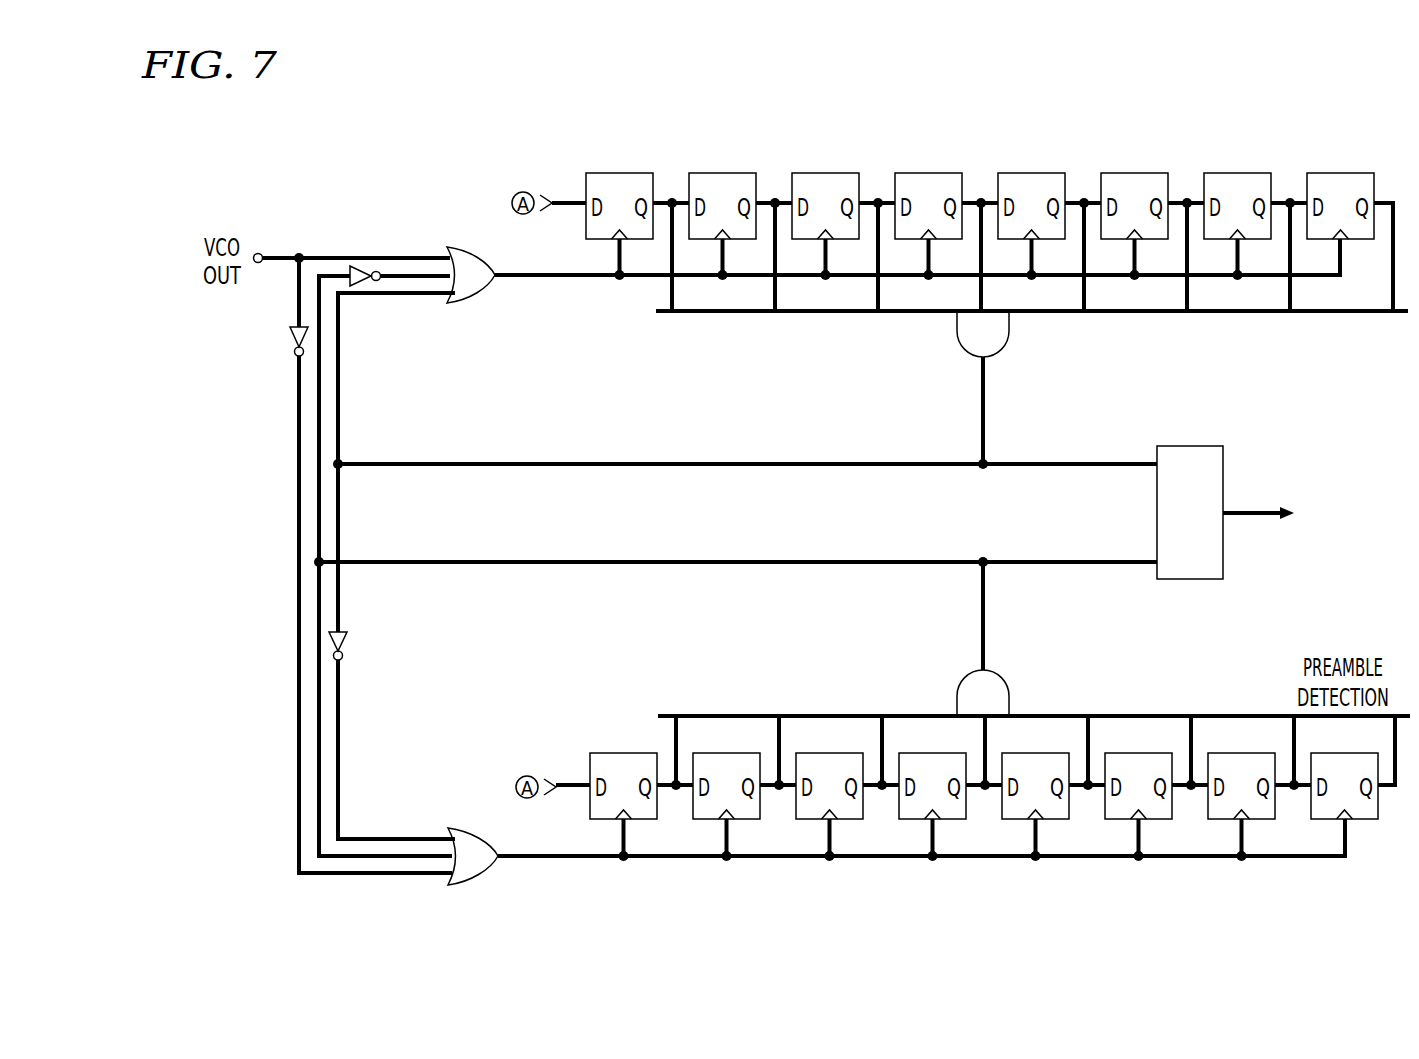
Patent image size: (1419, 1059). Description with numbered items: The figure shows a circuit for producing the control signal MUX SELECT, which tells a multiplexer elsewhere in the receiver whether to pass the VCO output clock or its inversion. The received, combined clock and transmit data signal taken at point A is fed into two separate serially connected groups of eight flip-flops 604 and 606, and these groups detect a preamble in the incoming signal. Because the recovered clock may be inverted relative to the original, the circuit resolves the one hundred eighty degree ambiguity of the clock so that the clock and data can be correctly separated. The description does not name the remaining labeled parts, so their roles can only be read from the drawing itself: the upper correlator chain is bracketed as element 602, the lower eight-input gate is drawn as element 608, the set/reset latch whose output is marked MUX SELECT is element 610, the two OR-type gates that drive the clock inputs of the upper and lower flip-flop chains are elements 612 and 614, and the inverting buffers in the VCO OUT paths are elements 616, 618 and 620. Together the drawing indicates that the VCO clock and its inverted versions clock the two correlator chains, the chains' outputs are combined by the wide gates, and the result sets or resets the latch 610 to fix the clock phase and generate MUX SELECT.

The 0 degree clock correlator (shift register of D flip-flops) 602 is at (1385, 158).
The group of eight F/Fs 604 is at (1390, 867).
The group of eight F/Fs 606 is at (958, 351).
The 8 input AND gate 608 is at (960, 680).
The RS flip-flop (mux select) 610 is at (1195, 446).
The OR gate 612 is at (474, 302).
The OR gate 614 is at (477, 883).
The inverter 616 is at (346, 640).
The inverter 618 is at (293, 338).
The inverter 620 is at (363, 265).